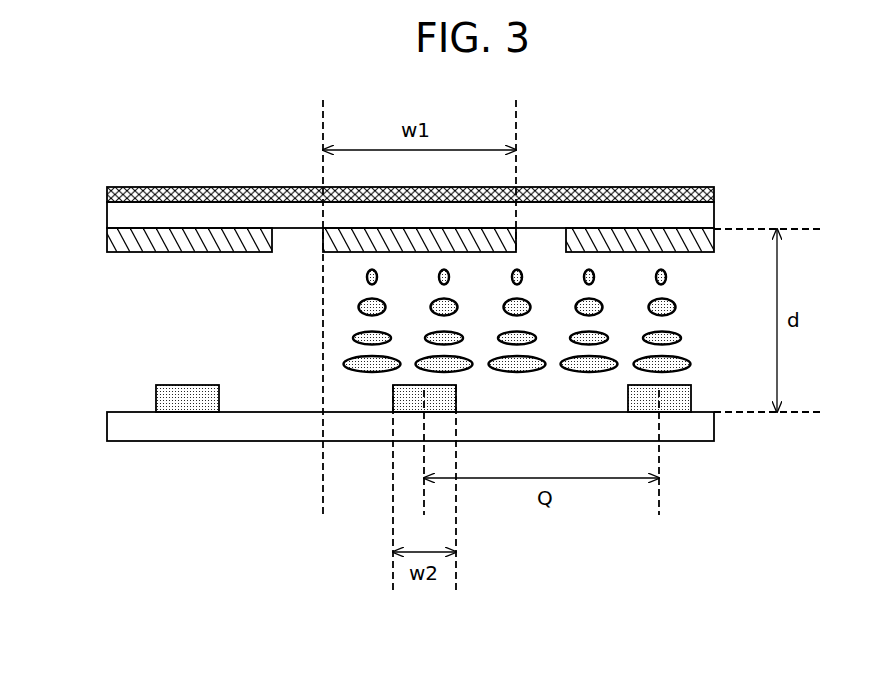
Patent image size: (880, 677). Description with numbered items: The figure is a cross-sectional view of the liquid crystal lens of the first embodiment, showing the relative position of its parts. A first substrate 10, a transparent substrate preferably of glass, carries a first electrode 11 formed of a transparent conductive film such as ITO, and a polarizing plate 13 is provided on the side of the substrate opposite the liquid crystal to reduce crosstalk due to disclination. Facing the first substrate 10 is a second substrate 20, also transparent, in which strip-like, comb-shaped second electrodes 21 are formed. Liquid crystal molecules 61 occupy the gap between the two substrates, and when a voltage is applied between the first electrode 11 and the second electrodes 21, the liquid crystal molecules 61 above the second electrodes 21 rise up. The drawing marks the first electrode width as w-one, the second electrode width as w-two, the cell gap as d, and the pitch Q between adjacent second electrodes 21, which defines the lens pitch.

The first substrate 10 is at (714, 217).
The first electrode 11 is at (600, 240).
The polarizing plate 13 is at (672, 190).
The second substrate 20 is at (700, 430).
The second electrode 21 is at (691, 398).
The liquid crystal molecules 61 is at (675, 298).